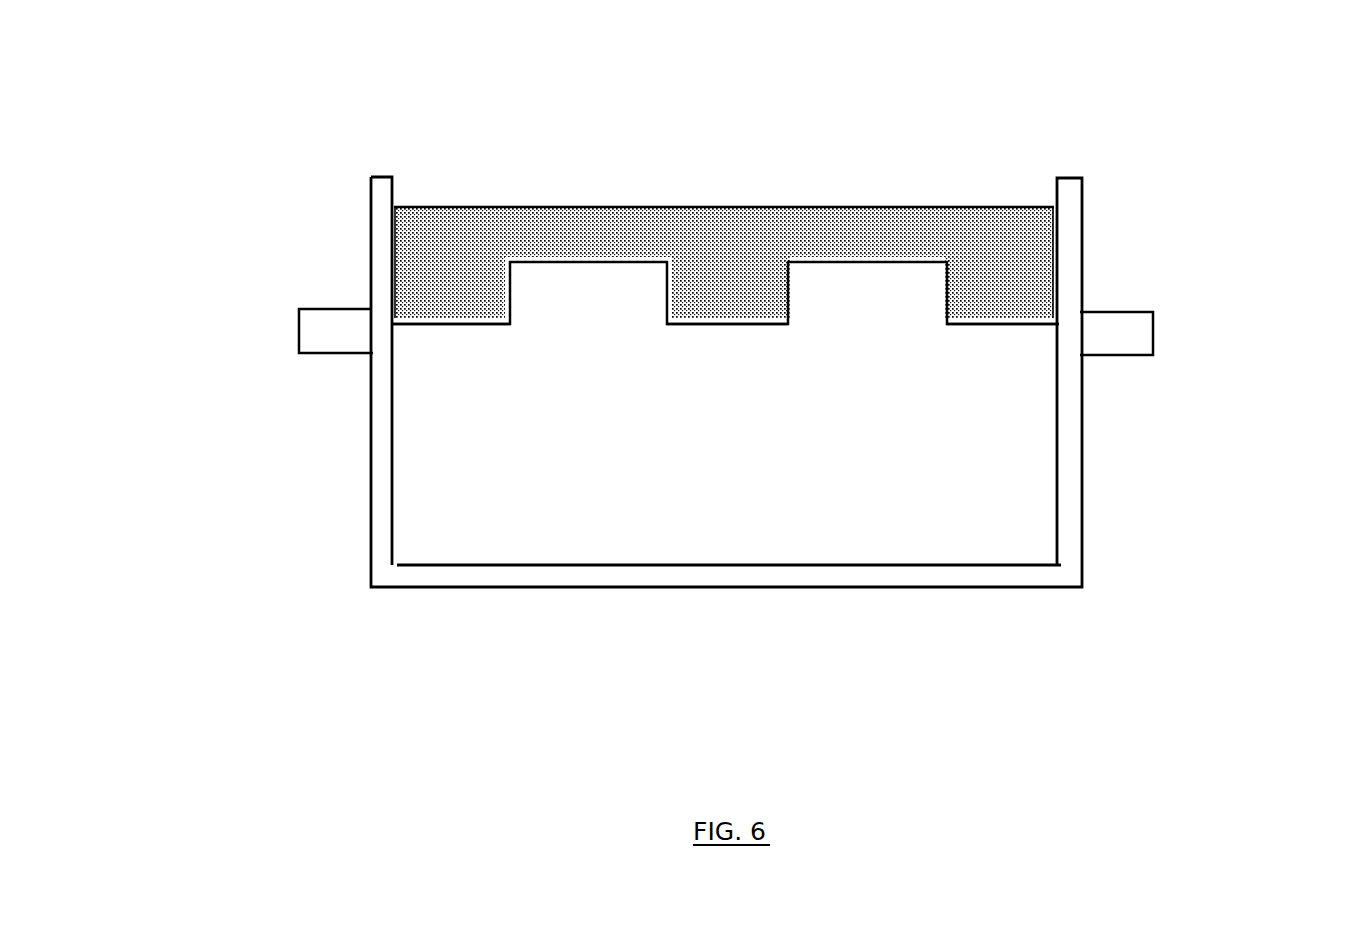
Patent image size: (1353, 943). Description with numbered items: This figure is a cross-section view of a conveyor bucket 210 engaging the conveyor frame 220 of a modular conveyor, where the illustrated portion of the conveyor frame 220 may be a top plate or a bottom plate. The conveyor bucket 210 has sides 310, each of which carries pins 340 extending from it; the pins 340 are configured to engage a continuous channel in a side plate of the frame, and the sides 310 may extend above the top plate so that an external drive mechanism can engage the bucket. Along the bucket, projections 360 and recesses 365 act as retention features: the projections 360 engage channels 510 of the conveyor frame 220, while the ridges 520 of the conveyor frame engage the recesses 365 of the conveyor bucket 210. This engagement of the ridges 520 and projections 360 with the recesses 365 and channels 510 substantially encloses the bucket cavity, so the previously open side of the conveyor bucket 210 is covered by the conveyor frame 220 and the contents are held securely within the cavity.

The conveyor bucket 210 is at (342, 449).
The conveyor frame 220 is at (395, 119).
The sides 310 is at (1065, 283).
The pins 340 is at (1112, 325).
The projections 360 is at (607, 317).
The recesses 365 is at (985, 326).
The channels 510 is at (598, 261).
The ridges 520 is at (437, 295).